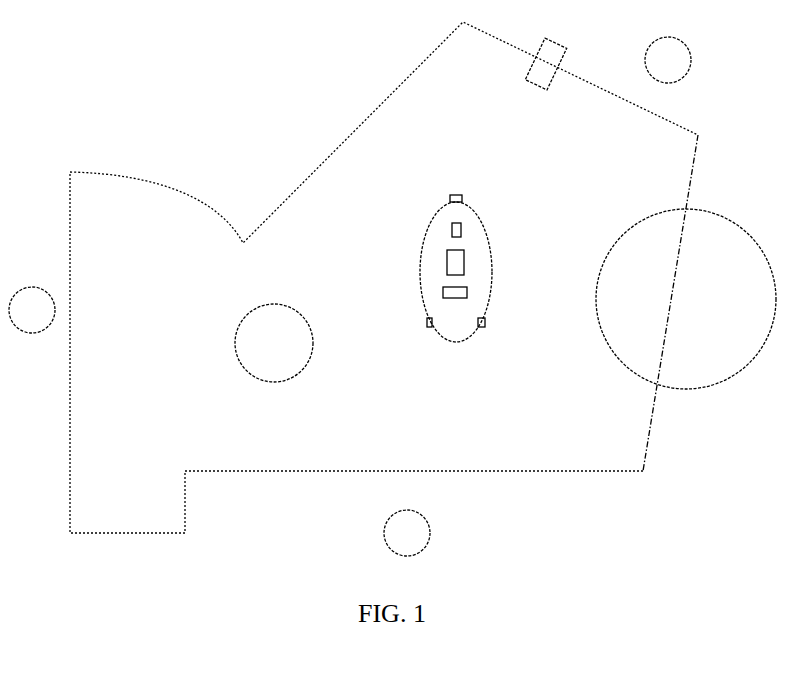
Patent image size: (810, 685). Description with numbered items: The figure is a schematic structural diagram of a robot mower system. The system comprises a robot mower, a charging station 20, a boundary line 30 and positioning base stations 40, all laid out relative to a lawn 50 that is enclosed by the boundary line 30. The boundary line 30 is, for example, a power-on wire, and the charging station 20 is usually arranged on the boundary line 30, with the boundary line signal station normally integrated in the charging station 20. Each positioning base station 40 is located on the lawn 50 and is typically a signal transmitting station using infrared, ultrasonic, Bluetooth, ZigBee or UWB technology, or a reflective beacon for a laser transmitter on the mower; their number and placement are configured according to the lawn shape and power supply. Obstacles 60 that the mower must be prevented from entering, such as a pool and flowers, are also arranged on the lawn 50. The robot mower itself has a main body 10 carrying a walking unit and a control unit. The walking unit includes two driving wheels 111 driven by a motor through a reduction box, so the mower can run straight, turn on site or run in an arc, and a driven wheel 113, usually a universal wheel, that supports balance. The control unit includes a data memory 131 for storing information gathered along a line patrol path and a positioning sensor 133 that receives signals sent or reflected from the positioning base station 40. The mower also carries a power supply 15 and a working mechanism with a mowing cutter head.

The main body 10 is at (467, 337).
The power supply 15 is at (467, 293).
The charging station 20 is at (552, 46).
The boundary line 30 is at (675, 285).
The positioning base station 40 is at (682, 51).
The lawn 50 is at (628, 423).
The obstacles 60 is at (290, 358).
The driving wheels 111 is at (427, 322).
The driven wheel 113 is at (463, 198).
The data memory 131 is at (460, 265).
The positioning sensor 133 is at (458, 232).